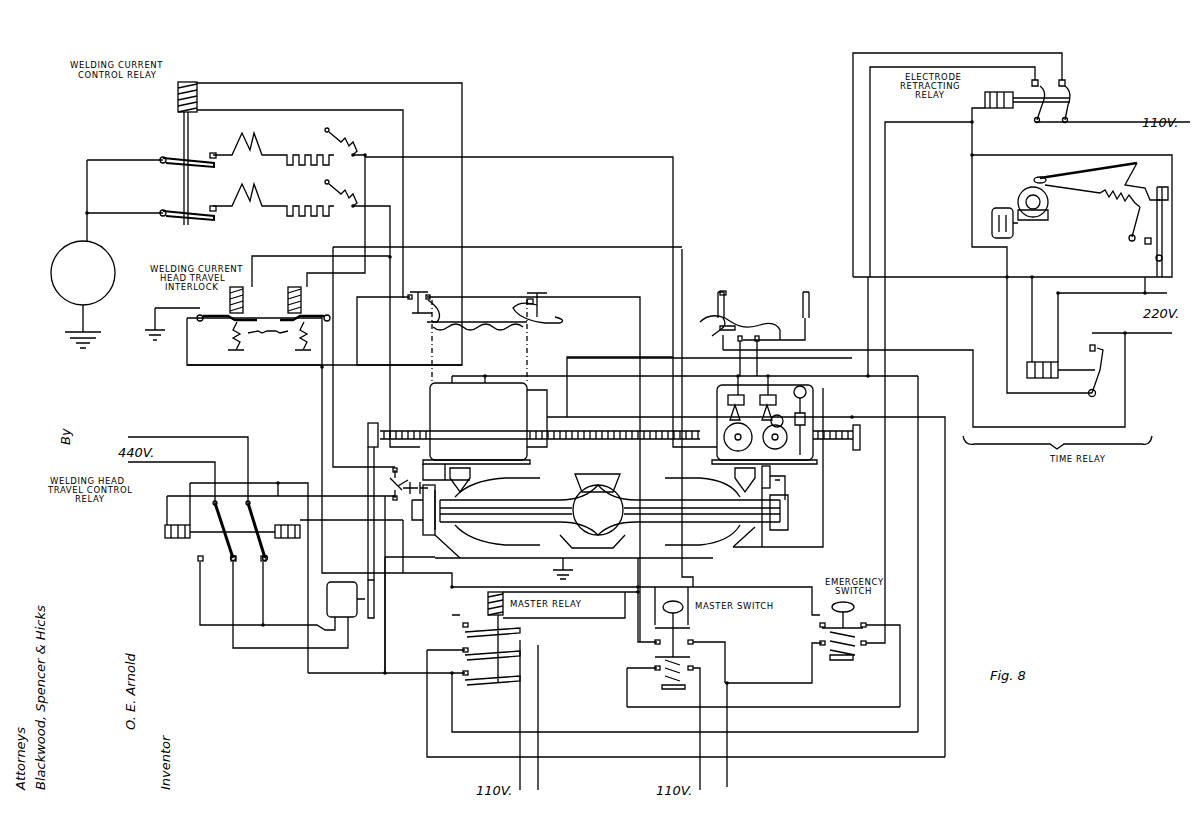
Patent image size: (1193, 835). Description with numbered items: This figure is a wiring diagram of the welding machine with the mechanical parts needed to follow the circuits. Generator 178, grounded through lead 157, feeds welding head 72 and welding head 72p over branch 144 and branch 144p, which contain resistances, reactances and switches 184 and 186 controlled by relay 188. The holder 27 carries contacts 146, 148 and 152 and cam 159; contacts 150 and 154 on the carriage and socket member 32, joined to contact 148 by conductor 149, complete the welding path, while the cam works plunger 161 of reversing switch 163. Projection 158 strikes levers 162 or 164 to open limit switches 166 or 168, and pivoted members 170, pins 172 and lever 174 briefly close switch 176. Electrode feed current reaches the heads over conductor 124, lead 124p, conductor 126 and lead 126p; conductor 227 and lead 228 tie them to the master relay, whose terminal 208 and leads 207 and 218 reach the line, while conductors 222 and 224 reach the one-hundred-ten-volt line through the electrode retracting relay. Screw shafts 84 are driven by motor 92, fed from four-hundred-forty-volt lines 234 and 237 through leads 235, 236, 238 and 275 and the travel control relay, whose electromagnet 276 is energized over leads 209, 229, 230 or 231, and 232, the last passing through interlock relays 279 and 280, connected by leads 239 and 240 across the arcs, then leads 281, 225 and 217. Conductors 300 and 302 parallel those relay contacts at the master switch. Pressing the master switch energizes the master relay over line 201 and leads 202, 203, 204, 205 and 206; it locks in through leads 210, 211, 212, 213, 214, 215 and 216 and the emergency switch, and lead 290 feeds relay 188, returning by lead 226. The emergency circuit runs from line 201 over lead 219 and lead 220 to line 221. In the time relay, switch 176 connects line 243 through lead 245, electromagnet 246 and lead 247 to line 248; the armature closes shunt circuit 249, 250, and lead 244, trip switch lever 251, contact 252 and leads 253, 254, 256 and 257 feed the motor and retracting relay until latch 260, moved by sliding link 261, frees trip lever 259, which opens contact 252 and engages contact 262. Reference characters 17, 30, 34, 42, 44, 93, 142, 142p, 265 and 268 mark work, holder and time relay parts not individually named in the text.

The pipe 17 is at (534, 530).
The holder 27 is at (762, 540).
The pipe coupling 30 is at (592, 513).
The socket member 32 is at (585, 474).
The pipe support 34 is at (570, 548).
The pipe flange 42 is at (478, 520).
The pipe flange 44 is at (515, 507).
The welding head 72 is at (711, 407).
The welding head 72p is at (423, 415).
The screw shafts 84 is at (622, 438).
The motor 92 is at (340, 580).
The electrode 93 is at (462, 490).
The conductor 124 is at (831, 376).
The lead 124p is at (544, 375).
The conductor 126 is at (832, 416).
The lead 126p is at (568, 396).
The welding head frame 142 is at (824, 488).
The motor connection 142p is at (548, 424).
The branch 144 is at (128, 159).
The branch 144p is at (120, 215).
The contact 146 is at (433, 556).
The contact 148 is at (441, 466).
The conductor 149 is at (548, 468).
The stationary contact 150 is at (447, 545).
The contact 152 is at (785, 484).
The contact 154 is at (771, 470).
The ground lead 157 is at (558, 570).
The projection 158 is at (430, 300).
The cam 159 is at (422, 530).
The plunger 161 is at (412, 484).
The lever 162 is at (420, 320).
The reversing switch 163 is at (396, 500).
The lever 164 is at (552, 318).
The limit switch 166 is at (419, 290).
The limit switch 168 is at (541, 292).
The pivoted members 170 is at (726, 290).
The pins 172 is at (716, 305).
The lever 174 is at (728, 322).
The switch 176 is at (720, 337).
The welding current generator 178 is at (58, 294).
The switch 184 is at (176, 166).
The switch 186 is at (191, 223).
The welding circuit control relay 188 is at (192, 82).
The supply line 201 is at (729, 742).
The lead 202 is at (727, 680).
The lead 203 is at (632, 645).
The lead 204 is at (636, 600).
The lead 205 is at (594, 619).
The lead 206 is at (698, 718).
The supply line 207 is at (470, 732).
The terminal 208 is at (462, 670).
The lead 209 is at (400, 672).
The lead 210 is at (368, 296).
The lead 211 is at (410, 301).
The lead 212 is at (472, 296).
The lead 213 is at (594, 297).
The lead 214 is at (626, 706).
The lead 215 is at (818, 624).
The lead 216 is at (598, 587).
The lead 217 is at (288, 524).
The lead 218 is at (540, 772).
The lead 219 is at (764, 683).
The lead 220 is at (873, 645).
The supply line 221 is at (1055, 128).
The conductor 222 is at (1006, 66).
The conductor 224 is at (851, 348).
The lead 225 is at (320, 405).
The lead 226 is at (348, 84).
The conductor 227 is at (425, 712).
The lead 228 is at (440, 714).
The lead 229 is at (350, 674).
The lead 230 is at (258, 482).
The lead 231 is at (278, 485).
The lead 232 is at (397, 468).
The supply line 234 is at (195, 436).
The lead 235 is at (265, 605).
The lead 236 is at (233, 592).
The supply line 237 is at (189, 461).
The lead 238 is at (216, 606).
The lead 239 is at (372, 247).
The lead 240 is at (356, 200).
The supply line 243 is at (1160, 336).
The lead 244 is at (1008, 278).
The lead 245 is at (1035, 325).
The electromagnet 246 is at (1045, 361).
The lead 247 is at (1059, 325).
The supply line 248 is at (1103, 296).
The shunt circuit 249 is at (1114, 332).
The shunt circuit 250 is at (1040, 394).
The trip switch lever 251 is at (1150, 276).
The contact 252 is at (1168, 203).
The lead 253 is at (1115, 155).
The lead 254 is at (972, 218).
The lead 256 is at (1049, 270).
The lead 257 is at (971, 150).
The trip lever 259 is at (1128, 237).
The latch 260 is at (1138, 182).
The sliding link 261 is at (1085, 170).
The contact 262 is at (1152, 257).
The clutch 265 is at (1005, 212).
The spring 268 is at (1105, 198).
The lead 275 is at (320, 627).
The electromagnet 276 is at (162, 531).
The interlock relay 279 is at (301, 298).
The interlock relay 280 is at (244, 300).
The lead 281 is at (260, 366).
The lead 290 is at (292, 111).
The conductor 300 is at (667, 589).
The conductor 302 is at (574, 249).